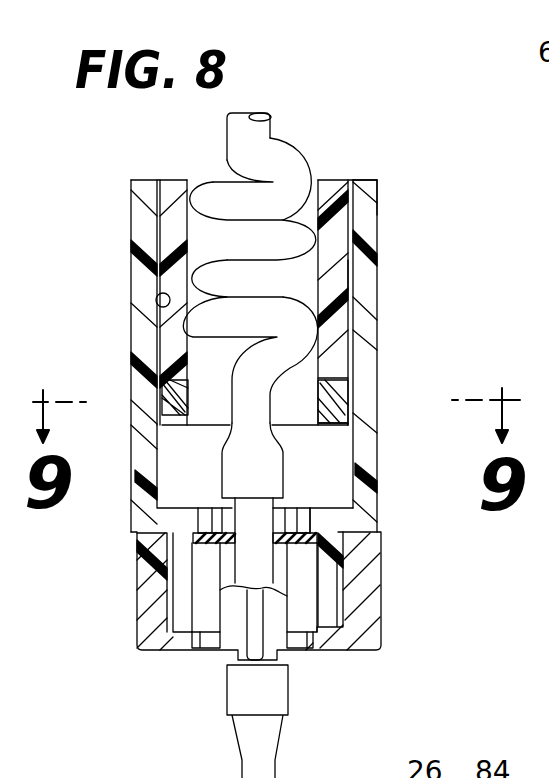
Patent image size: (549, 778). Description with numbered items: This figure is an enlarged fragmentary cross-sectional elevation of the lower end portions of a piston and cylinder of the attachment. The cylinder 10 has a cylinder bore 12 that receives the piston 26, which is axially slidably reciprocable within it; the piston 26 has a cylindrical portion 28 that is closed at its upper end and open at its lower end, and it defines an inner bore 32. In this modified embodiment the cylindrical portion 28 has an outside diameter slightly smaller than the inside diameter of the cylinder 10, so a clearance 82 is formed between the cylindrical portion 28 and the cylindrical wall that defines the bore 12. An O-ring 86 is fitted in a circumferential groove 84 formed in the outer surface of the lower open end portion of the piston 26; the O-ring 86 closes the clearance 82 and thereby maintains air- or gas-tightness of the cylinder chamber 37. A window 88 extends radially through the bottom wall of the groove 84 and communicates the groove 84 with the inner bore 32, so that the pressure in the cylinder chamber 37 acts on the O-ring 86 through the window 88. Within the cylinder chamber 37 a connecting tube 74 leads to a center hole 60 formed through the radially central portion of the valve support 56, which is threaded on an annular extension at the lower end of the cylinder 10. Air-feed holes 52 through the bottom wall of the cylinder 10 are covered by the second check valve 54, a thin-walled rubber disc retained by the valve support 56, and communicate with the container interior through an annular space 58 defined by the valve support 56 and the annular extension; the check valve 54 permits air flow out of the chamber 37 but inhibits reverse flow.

The cylinder 10 is at (378, 228).
The cylinder bore 12 is at (163, 293).
The piston 26 is at (352, 288).
The cylindrical portion 28 is at (170, 230).
The inner bore 32 is at (373, 203).
The cylinder chamber 37 is at (320, 450).
The air-feed holes 52 is at (210, 505).
The second check valve 54 is at (193, 573).
The valve support 56 is at (363, 617).
The annular space 58 is at (303, 583).
The center hole 60 is at (253, 635).
The connecting tube 74 is at (290, 345).
The clearance 82 is at (350, 273).
The circumferential groove 84 is at (160, 408).
The O-ring 86 is at (350, 398).
The window 88 is at (342, 387).